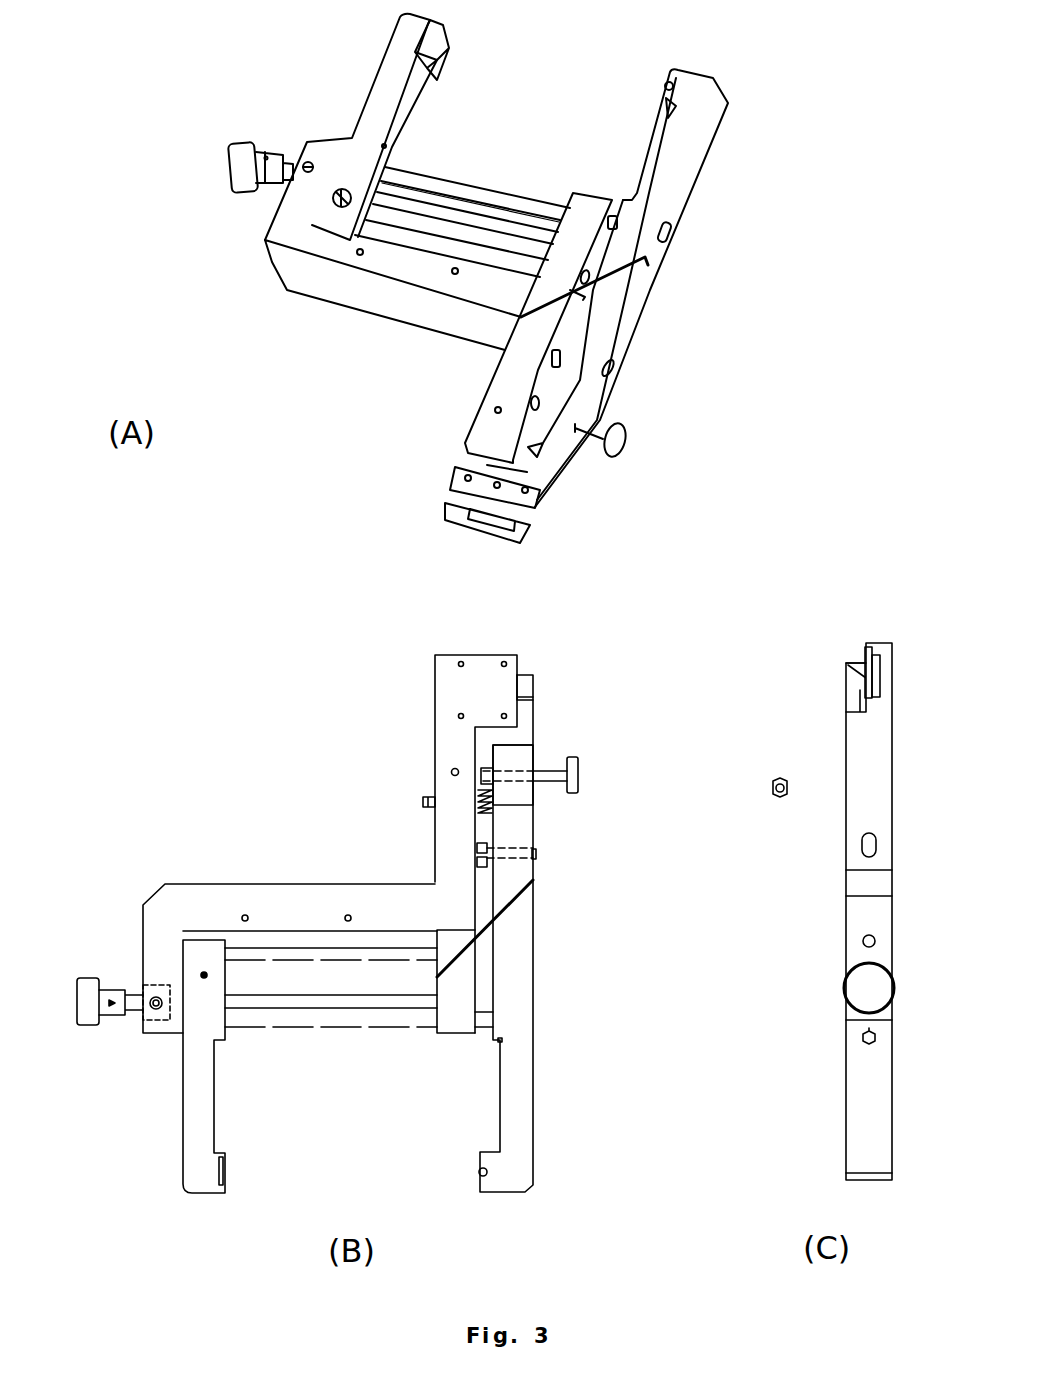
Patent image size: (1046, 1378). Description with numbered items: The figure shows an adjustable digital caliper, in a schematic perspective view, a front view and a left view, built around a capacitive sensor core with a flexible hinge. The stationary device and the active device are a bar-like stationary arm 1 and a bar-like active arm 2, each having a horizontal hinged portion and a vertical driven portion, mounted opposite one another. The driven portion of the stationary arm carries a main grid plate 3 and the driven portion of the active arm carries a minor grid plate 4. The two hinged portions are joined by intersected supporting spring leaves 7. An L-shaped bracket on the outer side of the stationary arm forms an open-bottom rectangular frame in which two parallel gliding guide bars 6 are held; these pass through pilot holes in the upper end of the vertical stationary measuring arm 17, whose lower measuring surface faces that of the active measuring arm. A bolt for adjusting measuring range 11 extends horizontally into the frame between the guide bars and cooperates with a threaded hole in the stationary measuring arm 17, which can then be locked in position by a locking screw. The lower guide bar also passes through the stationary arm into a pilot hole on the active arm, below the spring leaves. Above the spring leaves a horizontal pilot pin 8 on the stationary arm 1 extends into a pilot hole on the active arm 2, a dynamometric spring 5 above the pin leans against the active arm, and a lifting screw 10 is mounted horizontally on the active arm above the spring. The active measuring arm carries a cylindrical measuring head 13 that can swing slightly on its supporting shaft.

In FIG. 3B, the stationary arm 1 is at (502, 680).
In FIG. 3C, the active arm 2 is at (850, 663).
In FIG. 3C, the main grid plate 3 is at (850, 690).
In FIG. 3B, the minor grid plate 4 is at (503, 758).
In FIG. 3B, the dynamometric spring 5 is at (490, 798).
In FIG. 3B, the gliding guide bars 6 is at (315, 952).
In FIG. 3B, the intersected supporting spring leaves 7 is at (515, 905).
In FIG. 3B, the pilot pin 8 is at (485, 857).
In FIG. 3B, the lifting screw 10 is at (545, 773).
In FIG. 3B, the bolt for adjusting measuring range 11 is at (425, 1000).
In FIG. 3B, the cylindrical measuring head 13 is at (483, 1170).
In FIG. 3B, the stationary measuring arm 17 is at (202, 1090).